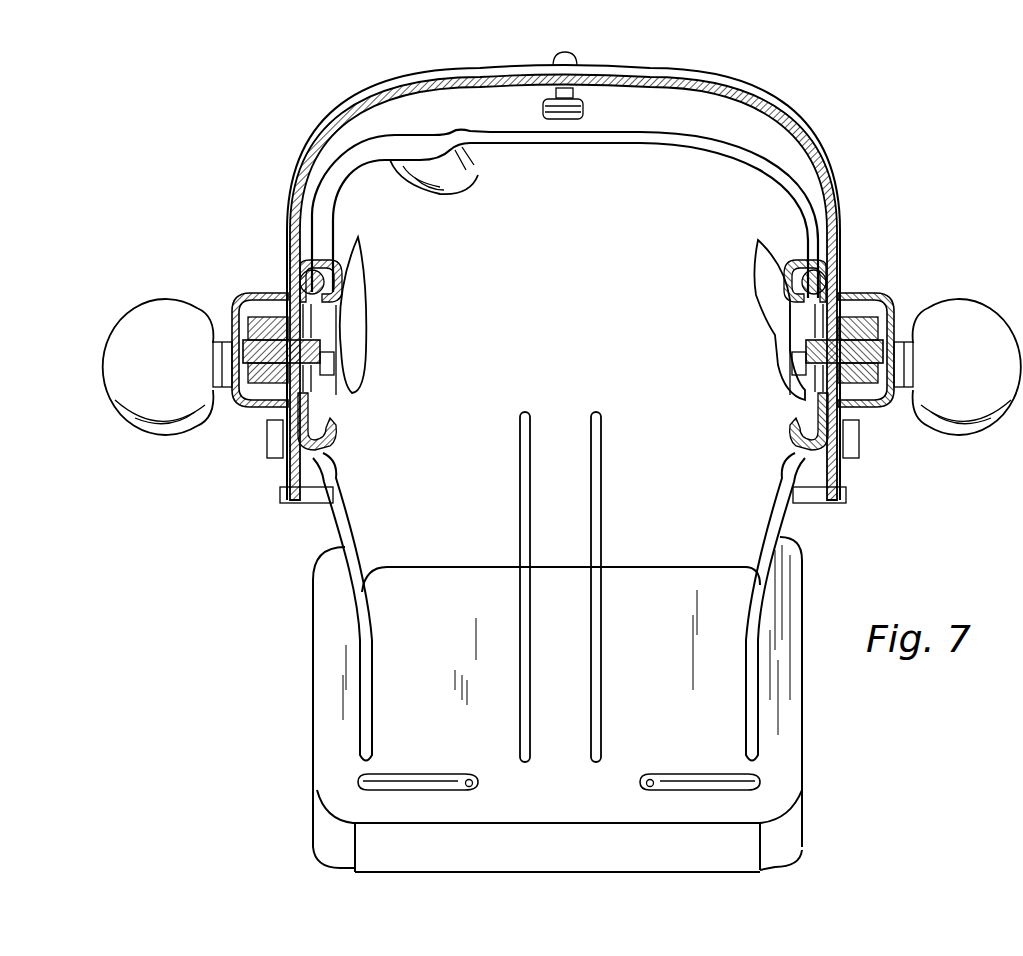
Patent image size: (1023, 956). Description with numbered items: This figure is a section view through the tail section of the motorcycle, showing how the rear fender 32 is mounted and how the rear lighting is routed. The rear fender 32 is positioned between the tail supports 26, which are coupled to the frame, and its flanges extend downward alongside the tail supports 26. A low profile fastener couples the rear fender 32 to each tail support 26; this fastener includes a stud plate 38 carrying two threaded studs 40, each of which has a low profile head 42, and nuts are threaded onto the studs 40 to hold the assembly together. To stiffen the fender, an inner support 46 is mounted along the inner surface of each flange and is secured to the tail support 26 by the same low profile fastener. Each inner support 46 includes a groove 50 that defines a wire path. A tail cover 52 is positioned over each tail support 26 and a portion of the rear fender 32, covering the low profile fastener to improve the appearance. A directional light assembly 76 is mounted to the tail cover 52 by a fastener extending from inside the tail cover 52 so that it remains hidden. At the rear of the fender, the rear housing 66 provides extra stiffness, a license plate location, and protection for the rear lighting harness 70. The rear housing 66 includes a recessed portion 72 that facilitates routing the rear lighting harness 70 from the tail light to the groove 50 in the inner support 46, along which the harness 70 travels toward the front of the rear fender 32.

The rear fender 32 is at (793, 106).
The rear housing 66 is at (812, 207).
The rear lighting harness 70 is at (343, 200).
The recessed portion 72 is at (476, 178).
The inner support 46 is at (355, 298).
The groove 50 is at (300, 283).
The tail cover 52 is at (250, 298).
The threaded stud 40 is at (318, 345).
The low profile head 42 is at (247, 353).
The stud plate 38 is at (247, 398).
The tail support 26 is at (262, 415).
The directional light assembly 76 is at (120, 438).